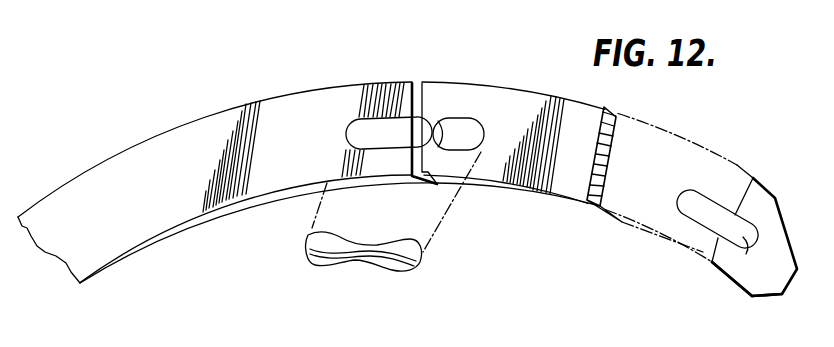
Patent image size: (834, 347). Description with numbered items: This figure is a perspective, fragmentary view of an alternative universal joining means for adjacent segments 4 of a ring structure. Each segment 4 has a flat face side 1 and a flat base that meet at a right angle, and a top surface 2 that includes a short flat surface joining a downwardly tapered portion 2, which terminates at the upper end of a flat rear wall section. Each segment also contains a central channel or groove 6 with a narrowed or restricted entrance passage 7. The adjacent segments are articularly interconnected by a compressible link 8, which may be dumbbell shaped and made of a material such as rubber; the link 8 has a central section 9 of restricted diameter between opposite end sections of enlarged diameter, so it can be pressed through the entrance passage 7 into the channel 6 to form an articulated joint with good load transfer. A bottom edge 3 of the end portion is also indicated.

The face side 1 is at (209, 142).
The top surface 2 is at (783, 218).
The bottom wall of end plate 3 is at (788, 290).
The segment 4 is at (415, 84).
The central channel 6 is at (731, 283).
The restricted entrance passage 7 is at (358, 128).
The interconnecting link 8 is at (407, 268).
The central section 9 is at (367, 260).